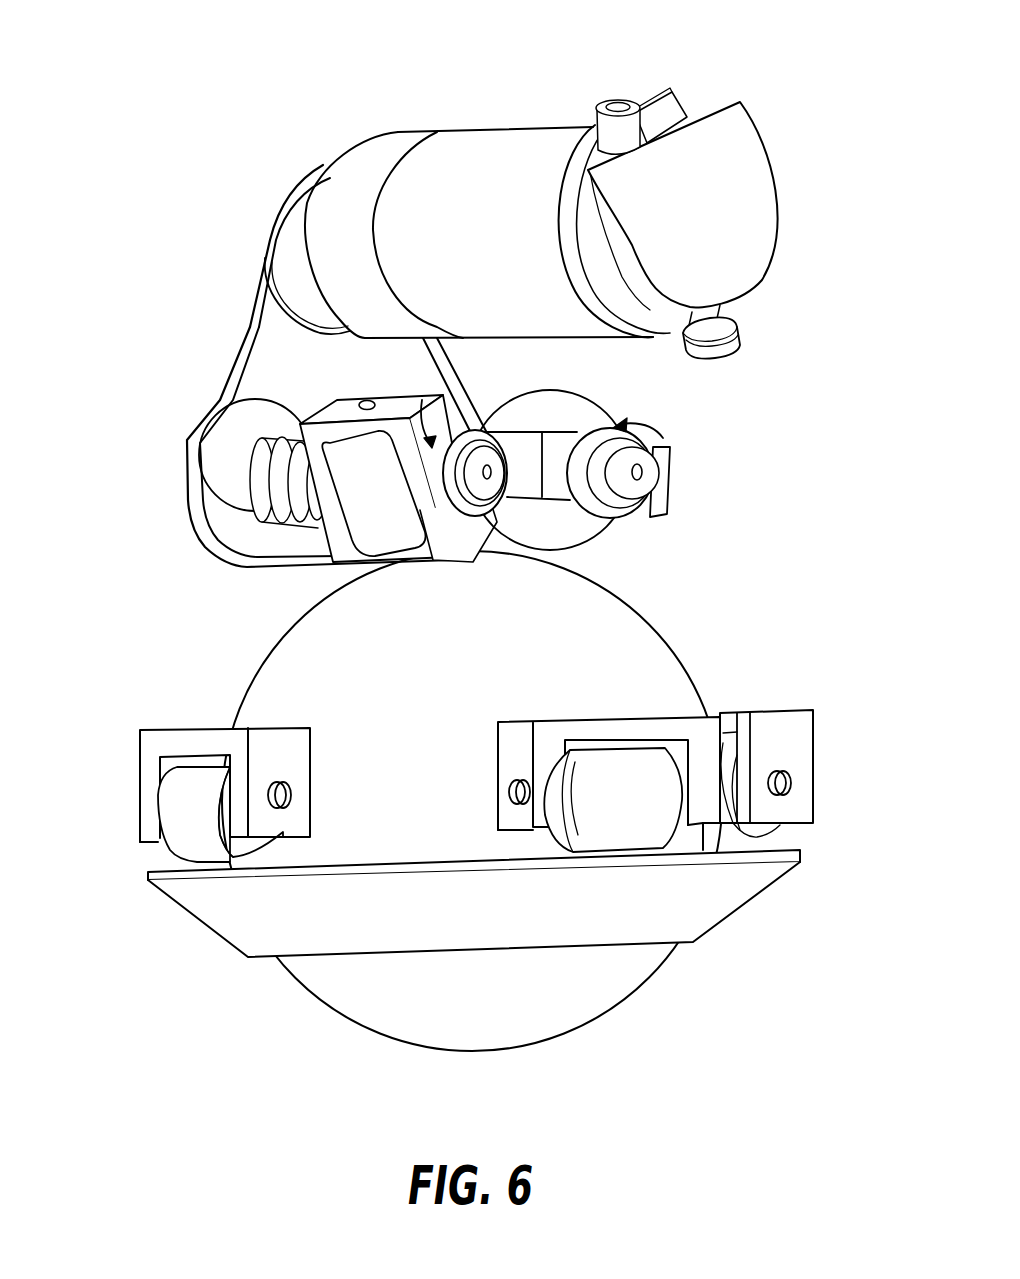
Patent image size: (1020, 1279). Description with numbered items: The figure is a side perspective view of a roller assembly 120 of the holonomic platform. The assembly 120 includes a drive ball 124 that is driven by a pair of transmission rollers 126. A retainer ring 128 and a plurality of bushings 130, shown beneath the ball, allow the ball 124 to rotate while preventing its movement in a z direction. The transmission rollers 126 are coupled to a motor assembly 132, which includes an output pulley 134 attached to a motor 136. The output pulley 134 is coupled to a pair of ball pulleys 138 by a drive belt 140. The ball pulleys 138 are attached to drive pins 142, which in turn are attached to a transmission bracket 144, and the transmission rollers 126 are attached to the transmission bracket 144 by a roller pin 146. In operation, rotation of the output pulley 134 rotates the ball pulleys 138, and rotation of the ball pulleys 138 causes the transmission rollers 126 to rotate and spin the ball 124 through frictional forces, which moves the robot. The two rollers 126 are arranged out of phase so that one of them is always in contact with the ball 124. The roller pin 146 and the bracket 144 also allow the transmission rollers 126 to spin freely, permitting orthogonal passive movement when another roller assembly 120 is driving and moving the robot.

The roller assembly 120 is at (708, 480).
The drive ball 124 is at (577, 992).
The transmission rollers 126 is at (367, 498).
The retainer ring 128 is at (240, 910).
The bushings 130 is at (180, 743).
The motor assembly 132 is at (503, 195).
The output pulley 134 is at (270, 243).
The motor 136 is at (378, 162).
The ball pulleys 138 is at (232, 475).
The drive belt 140 is at (232, 346).
The drive pins 142 is at (280, 490).
The transmission bracket 144 is at (322, 426).
The roller pin 146 is at (368, 400).